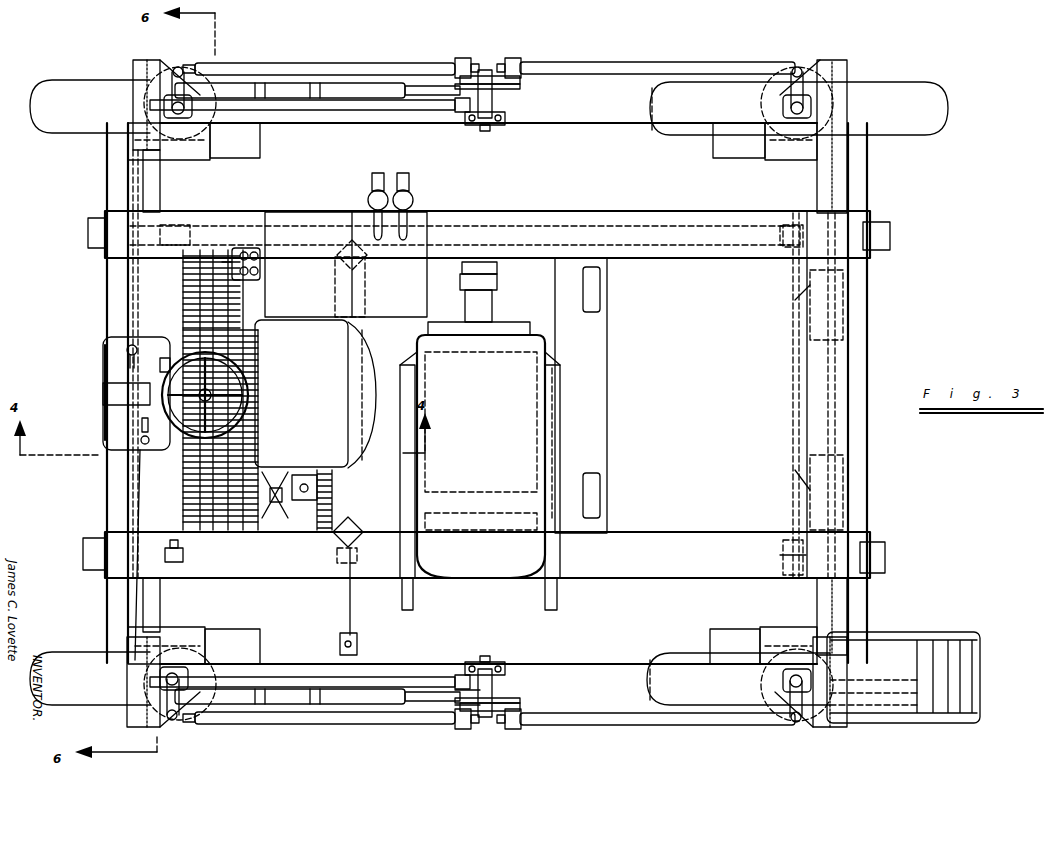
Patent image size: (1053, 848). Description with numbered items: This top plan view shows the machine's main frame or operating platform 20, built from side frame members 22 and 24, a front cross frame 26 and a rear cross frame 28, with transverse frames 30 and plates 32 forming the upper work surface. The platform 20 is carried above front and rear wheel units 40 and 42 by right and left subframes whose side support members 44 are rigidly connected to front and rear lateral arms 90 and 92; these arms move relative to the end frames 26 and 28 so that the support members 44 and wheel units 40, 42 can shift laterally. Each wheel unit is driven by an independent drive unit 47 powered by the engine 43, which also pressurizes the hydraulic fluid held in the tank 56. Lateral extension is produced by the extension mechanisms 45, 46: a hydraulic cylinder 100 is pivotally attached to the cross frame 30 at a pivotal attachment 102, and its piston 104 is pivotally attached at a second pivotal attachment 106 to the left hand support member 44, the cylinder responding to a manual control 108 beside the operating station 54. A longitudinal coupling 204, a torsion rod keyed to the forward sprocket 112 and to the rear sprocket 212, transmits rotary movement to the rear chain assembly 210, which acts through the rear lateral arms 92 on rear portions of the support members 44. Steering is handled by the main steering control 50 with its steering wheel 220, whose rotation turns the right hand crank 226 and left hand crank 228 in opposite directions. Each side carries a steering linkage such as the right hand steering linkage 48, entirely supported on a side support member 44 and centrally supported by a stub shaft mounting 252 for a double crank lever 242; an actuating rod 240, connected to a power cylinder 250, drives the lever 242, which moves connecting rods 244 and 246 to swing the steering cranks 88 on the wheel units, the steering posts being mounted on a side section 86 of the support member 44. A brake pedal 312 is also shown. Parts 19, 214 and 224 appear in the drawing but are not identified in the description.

The tie rod assembly 19 is at (452, 738).
The main frame or operating platform 20 is at (496, 393).
The side frame member 22 is at (633, 212).
The side frame member 24 is at (695, 578).
The front cross frame 26 is at (107, 480).
The rear cross frame 28 is at (865, 378).
The transverse frame 30 is at (370, 292).
The plate 32 is at (245, 515).
The front wheel unit 40 is at (80, 144).
The rear wheel unit 42 is at (923, 140).
The engine 43 is at (565, 423).
The side support member 44 is at (539, 128).
The extension mechanism 45 is at (330, 570).
The extension mechanism 46 is at (185, 560).
The drive unit 47 is at (260, 148).
The right hand steering linkage 48 is at (472, 54).
The main steering control 50 is at (97, 393).
The operating station 54 is at (288, 312).
The reservoir or tank 56 is at (310, 213).
The side section 86 is at (615, 124).
The steering crank 88 is at (806, 92).
The front lateral arm 90 is at (160, 182).
The rear lateral arm 92 is at (840, 190).
The hydraulic cylinder 100 is at (350, 440).
The pivotal attachment 102 is at (350, 385).
The piston 104 is at (355, 628).
The pivotal attachment 106 is at (340, 645).
The manual control 108 is at (165, 362).
The forward sprocket 112 is at (180, 215).
The longitudinal coupling 204 is at (670, 245).
The rear chain assembly 210 is at (795, 375).
The rear sprocket 212 is at (795, 218).
The lower slide 214 is at (790, 572).
The steering wheel 220 is at (247, 363).
The control block 224 is at (110, 395).
The right hand crank 226 is at (110, 354).
The left hand crank 228 is at (145, 425).
The actuating rod 240 is at (415, 680).
The double crank lever 242 is at (497, 72).
The connecting rod 244 is at (312, 63).
The connecting rod 246 is at (660, 66).
The power cylinder 250 is at (378, 88).
The stub shaft mounting 252 is at (500, 108).
The brake pedal 312 is at (145, 460).